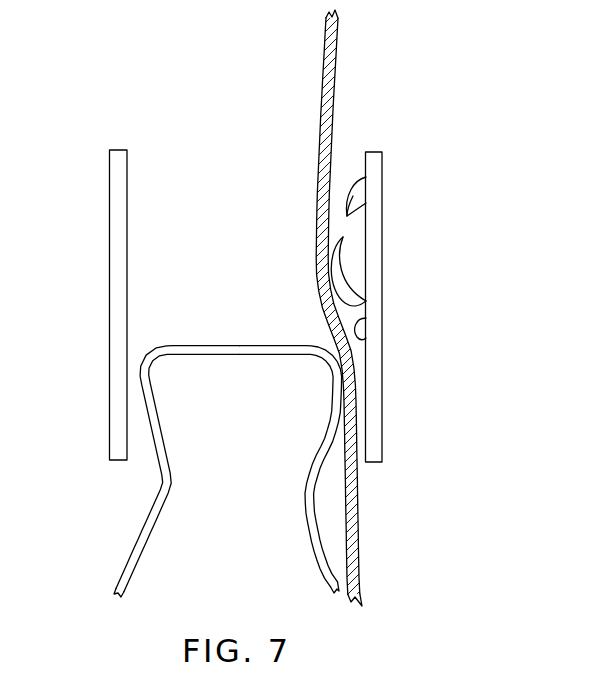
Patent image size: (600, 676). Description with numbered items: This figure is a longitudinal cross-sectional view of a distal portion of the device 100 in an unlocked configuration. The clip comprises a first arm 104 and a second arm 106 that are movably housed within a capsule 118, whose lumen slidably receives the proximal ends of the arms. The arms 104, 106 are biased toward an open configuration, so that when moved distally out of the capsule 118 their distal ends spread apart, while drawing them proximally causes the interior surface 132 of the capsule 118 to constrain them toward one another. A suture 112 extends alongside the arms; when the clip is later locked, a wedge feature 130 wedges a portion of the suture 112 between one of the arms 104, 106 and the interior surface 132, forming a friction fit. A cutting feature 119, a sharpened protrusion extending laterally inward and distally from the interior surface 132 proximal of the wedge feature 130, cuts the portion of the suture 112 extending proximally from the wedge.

The device 100 is at (133, 113).
The first arm 104 is at (131, 557).
The second arm 106 is at (327, 556).
The suture 112 is at (332, 128).
The capsule 118 is at (376, 389).
The cutting feature 119 is at (355, 200).
The wedge feature 130 is at (346, 272).
The interior surface 132 is at (362, 339).